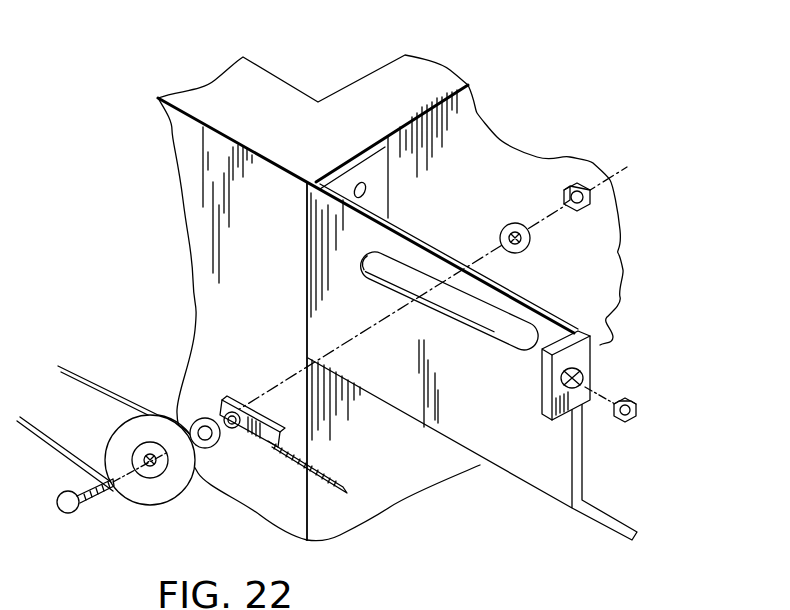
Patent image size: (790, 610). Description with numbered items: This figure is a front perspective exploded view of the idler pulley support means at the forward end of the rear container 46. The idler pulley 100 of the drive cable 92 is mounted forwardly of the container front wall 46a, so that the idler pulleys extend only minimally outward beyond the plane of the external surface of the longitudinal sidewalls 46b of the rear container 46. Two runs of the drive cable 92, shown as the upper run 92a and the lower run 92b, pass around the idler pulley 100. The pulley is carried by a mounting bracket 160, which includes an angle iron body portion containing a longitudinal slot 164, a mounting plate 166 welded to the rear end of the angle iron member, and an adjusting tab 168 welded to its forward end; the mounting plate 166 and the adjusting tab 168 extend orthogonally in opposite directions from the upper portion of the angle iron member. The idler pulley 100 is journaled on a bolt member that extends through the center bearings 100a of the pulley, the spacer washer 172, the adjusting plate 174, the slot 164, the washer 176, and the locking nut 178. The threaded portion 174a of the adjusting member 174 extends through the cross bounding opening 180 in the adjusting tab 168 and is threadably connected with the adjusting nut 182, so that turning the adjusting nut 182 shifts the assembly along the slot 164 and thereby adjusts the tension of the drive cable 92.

The rear container 46 is at (183, 200).
The container front wall 46a is at (462, 133).
The longitudinal sidewalls 46b is at (205, 295).
The drive cable 92 is at (106, 433).
The drive cable run 92a is at (87, 370).
The drive cable run 92b is at (33, 447).
The idler pulley 100 is at (143, 483).
The center bearings 100a is at (160, 470).
The mounting bracket 160 is at (452, 440).
The longitudinal slot 164 is at (532, 350).
The mounting plate 166 is at (365, 165).
The adjusting tab 168 is at (553, 423).
The spacer washer 172 is at (190, 428).
The adjusting plate 174 is at (233, 397).
The threaded portion 174a is at (337, 493).
The washer 176 is at (502, 236).
The locking nut 178 is at (583, 187).
The cross bounding opening 180 is at (582, 378).
The adjusting nut 182 is at (638, 410).